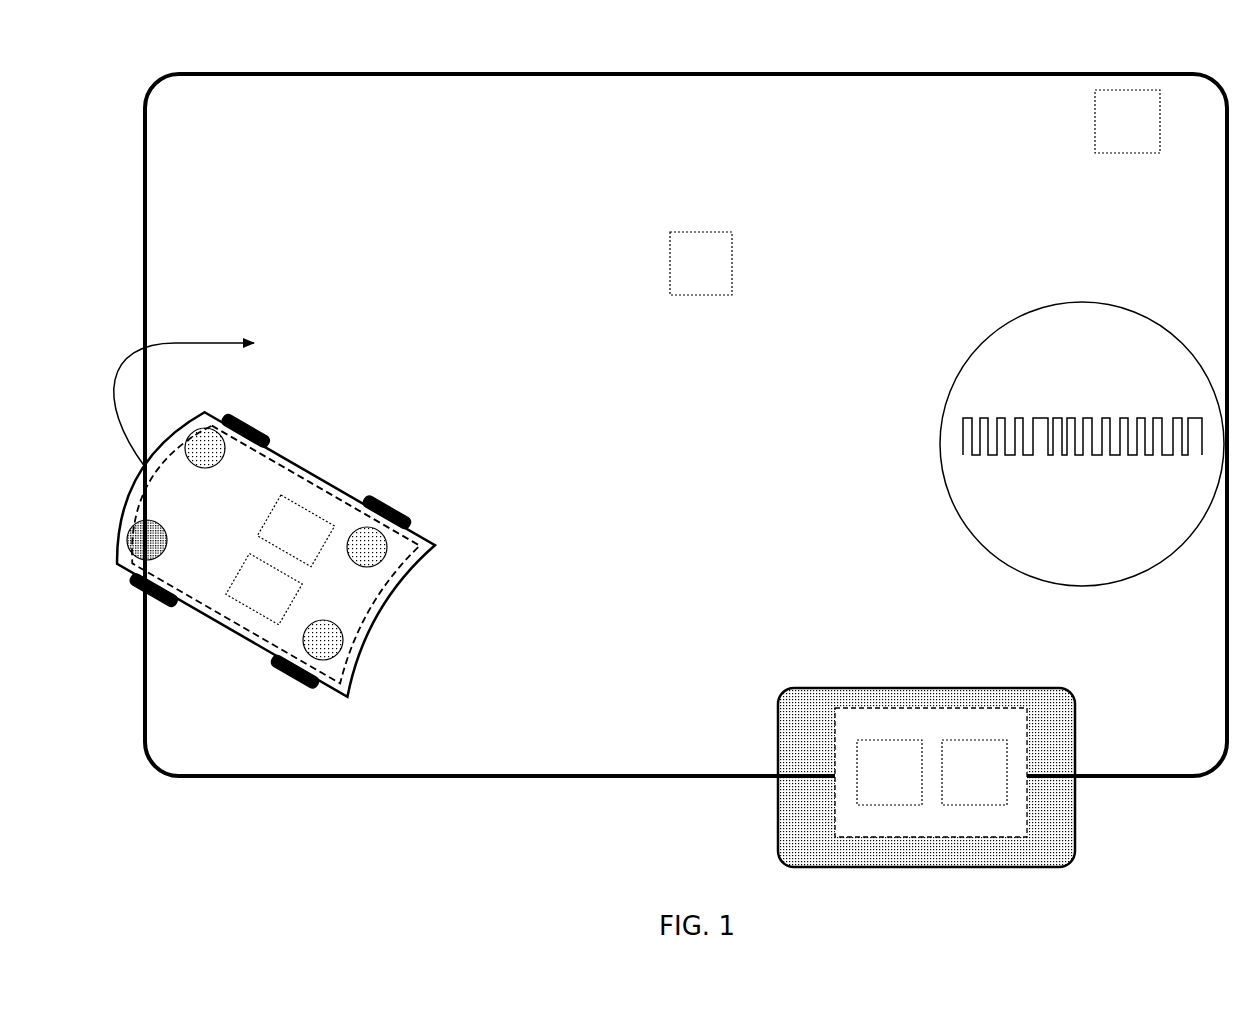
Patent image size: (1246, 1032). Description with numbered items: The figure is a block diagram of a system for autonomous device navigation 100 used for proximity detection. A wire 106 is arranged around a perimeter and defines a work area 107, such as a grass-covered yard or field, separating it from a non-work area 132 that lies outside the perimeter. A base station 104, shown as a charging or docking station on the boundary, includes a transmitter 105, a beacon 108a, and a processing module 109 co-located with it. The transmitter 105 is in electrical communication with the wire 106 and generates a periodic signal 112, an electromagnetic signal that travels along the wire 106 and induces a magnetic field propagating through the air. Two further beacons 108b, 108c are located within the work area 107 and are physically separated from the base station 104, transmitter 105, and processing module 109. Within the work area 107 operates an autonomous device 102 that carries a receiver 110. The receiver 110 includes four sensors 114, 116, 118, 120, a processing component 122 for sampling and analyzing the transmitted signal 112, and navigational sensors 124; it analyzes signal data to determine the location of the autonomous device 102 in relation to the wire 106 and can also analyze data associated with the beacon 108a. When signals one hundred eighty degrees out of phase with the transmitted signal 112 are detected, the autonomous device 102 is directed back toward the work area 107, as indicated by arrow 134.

The system for autonomous device navigation 100 is at (1006, 37).
The autonomous device 102 is at (300, 458).
The base station 104 is at (1077, 733).
The transmitter 105 is at (1010, 708).
The wire 106 is at (600, 775).
The work area 107 is at (689, 414).
The beacon 108a is at (868, 780).
The beacon 108b is at (680, 271).
The beacon 108c is at (1106, 130).
The processing module 109 is at (958, 780).
The receiver 110 is at (263, 637).
The periodic signal 112 is at (962, 438).
The sensor 114 is at (212, 468).
The sensor 116 is at (393, 540).
The sensor 118 is at (353, 660).
The sensor 120 is at (155, 518).
The processing component 122 is at (252, 600).
The navigational sensors 124 is at (284, 542).
The non-work area 132 is at (256, 41).
The arrow 134 is at (258, 336).